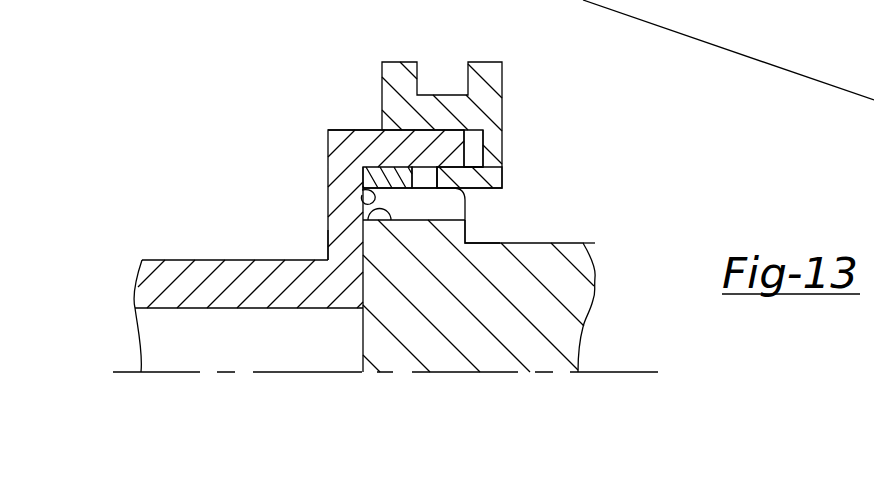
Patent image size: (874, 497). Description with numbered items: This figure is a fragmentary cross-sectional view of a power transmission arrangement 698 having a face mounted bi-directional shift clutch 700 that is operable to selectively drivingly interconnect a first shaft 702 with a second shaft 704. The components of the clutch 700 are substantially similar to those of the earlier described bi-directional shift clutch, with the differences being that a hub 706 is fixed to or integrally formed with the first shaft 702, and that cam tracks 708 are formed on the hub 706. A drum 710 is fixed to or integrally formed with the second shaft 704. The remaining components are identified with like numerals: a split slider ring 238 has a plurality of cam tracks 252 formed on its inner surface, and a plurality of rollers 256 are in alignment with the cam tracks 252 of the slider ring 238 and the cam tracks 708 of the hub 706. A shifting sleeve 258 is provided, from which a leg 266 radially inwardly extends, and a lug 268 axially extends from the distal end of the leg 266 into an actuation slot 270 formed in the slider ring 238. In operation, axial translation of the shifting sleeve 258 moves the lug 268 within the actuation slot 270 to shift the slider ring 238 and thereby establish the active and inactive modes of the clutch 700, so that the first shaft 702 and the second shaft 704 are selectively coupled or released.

The split slider ring 238 is at (370, 177).
The cam tracks 252 is at (363, 189).
The rollers 256 is at (452, 213).
The shifting sleeve 258 is at (510, 105).
The leg 266 is at (492, 143).
The lug 268 is at (478, 183).
The actuation slot 270 is at (423, 170).
The power transmission arrangement 698 is at (264, 124).
The face mounted bi-directional shift clutch 700 is at (610, 154).
The first shaft 702 is at (585, 289).
The second shaft 704 is at (168, 265).
The hub 706 is at (457, 233).
The cam tracks 708 is at (367, 204).
The drum 710 is at (433, 140).